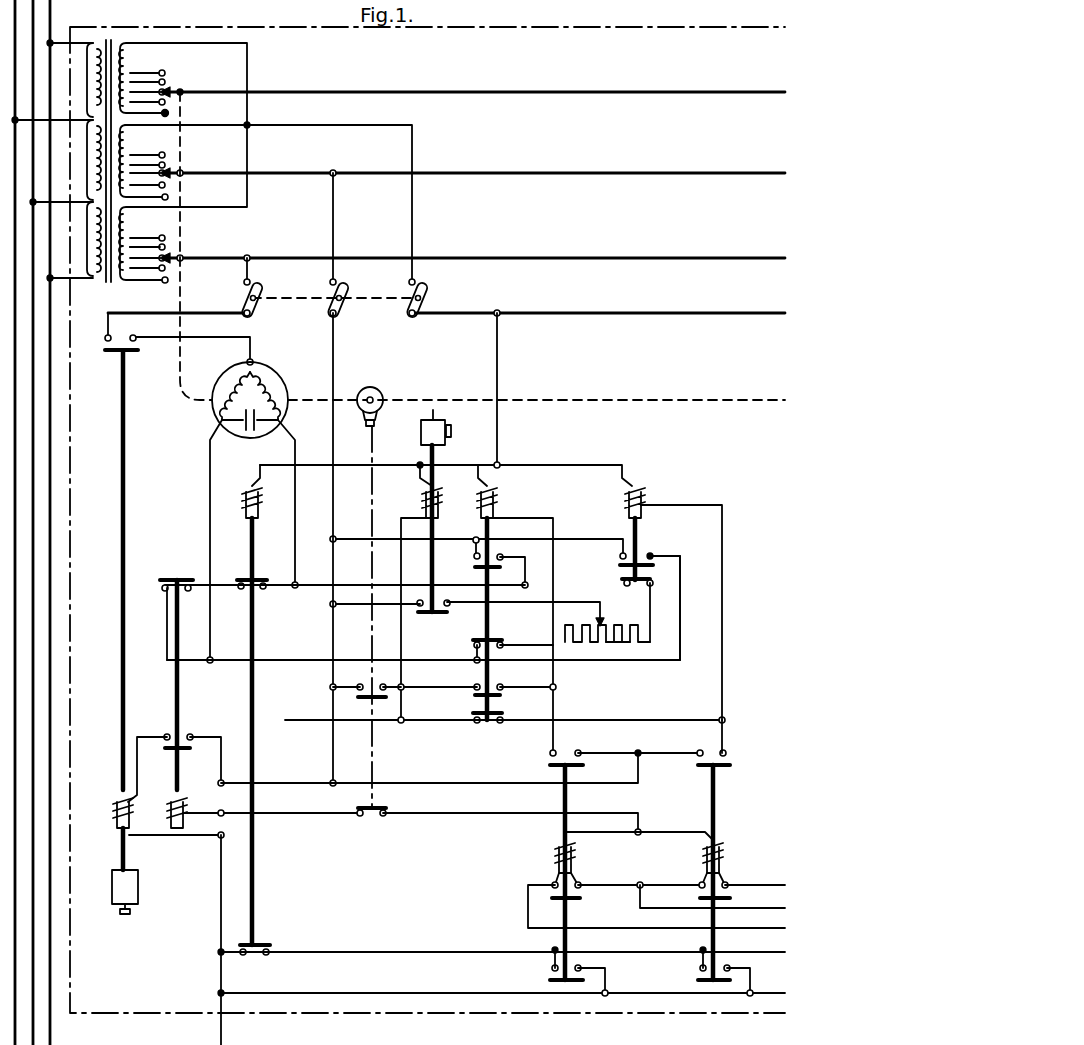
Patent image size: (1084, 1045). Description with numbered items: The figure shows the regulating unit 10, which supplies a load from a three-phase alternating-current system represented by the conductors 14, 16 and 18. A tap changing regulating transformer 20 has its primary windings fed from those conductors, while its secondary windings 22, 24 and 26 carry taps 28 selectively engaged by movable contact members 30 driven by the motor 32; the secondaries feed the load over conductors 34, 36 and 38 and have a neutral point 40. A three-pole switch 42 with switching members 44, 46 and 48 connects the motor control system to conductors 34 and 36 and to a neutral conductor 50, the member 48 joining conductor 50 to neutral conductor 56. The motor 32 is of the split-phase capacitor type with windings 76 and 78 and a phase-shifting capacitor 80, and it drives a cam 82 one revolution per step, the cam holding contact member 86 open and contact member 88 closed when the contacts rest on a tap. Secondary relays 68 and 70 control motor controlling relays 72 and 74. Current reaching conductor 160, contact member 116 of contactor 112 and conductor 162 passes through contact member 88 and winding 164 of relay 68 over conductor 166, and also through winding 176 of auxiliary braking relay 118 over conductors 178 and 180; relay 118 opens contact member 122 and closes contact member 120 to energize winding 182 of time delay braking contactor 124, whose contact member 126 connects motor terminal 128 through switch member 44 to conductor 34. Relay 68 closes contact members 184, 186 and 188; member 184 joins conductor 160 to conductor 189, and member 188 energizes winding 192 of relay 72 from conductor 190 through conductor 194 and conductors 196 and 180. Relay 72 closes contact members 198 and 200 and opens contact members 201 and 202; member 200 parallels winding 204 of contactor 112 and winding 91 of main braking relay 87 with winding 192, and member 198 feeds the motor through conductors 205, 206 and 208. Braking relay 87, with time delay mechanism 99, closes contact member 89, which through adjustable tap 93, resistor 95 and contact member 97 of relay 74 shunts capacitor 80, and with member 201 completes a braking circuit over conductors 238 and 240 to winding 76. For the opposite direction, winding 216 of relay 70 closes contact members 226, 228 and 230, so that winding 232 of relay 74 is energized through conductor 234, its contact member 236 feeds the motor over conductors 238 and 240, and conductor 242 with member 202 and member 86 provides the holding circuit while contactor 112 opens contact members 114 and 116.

The regulating unit 10 is at (470, 23).
The conductor 14 is at (50, 528).
The conductor 16 is at (33, 556).
The conductor 18 is at (15, 582).
The tap changing regulating transformer 20 is at (127, 303).
The secondary winding 22 is at (130, 216).
The secondary winding 24 is at (130, 134).
The secondary winding 26 is at (130, 52).
The taps 28 is at (163, 247).
The movable contact member 30 is at (167, 172).
The motor 32 is at (196, 431).
The conductor 34 is at (620, 249).
The conductor 36 is at (620, 164).
The conductor 38 is at (340, 86).
The neutral point 40 is at (248, 125).
The three-pole switch 42 is at (462, 308).
The switching member 44 is at (258, 290).
The switching member 46 is at (344, 290).
The switching member 48 is at (424, 290).
The neutral conductor 50 is at (413, 222).
The neutral conductor 56 is at (627, 308).
The secondary relay 68 is at (544, 861).
The secondary relay 70 is at (755, 861).
The motor controlling relay 72 is at (530, 495).
The motor controlling relay 74 is at (672, 533).
The single-phase winding 76 is at (232, 382).
The single-phase winding 78 is at (273, 382).
The phase-shifting capacitor 80 is at (240, 428).
The cam member 82 is at (372, 388).
The contact member 86 is at (370, 701).
The main braking relay 87 is at (431, 553).
The contact member 88 is at (380, 806).
The contact member 89 is at (390, 621).
The energizing winding 91 is at (424, 496).
The adjustable tap 93 is at (601, 624).
The resistor 95 is at (598, 646).
The contact member 97 is at (636, 610).
The time delay mechanism 99 is at (436, 420).
The contactor 112 is at (250, 548).
The contact member 114 is at (264, 577).
The contact member 116 is at (267, 943).
The auxiliary braking relay 118 is at (217, 773).
The contact member 120 is at (170, 750).
The contact member 122 is at (185, 580).
The time delay braking contactor 124 is at (123, 780).
The contact member 126 is at (116, 356).
The terminal 128 is at (251, 360).
The conductor 160 is at (444, 942).
The conductor 162 is at (221, 878).
The energizing winding 164 is at (573, 862).
The conductor 166 is at (528, 907).
The energizing winding 176 is at (183, 800).
The conductor 178 is at (306, 779).
The conductor 180 is at (333, 630).
The energizing winding 182 is at (118, 818).
The contact member 184 is at (550, 980).
The contact member 186 is at (571, 904).
The contact member 188 is at (573, 768).
The conductor 189 is at (372, 988).
The conductor 190 is at (497, 442).
The energizing winding 192 is at (484, 488).
The conductor 194 is at (553, 569).
The conductor 196 is at (492, 779).
The contact member 198 is at (475, 564).
The contact member 200 is at (473, 698).
The contact member 201 is at (510, 636).
The contact member 202 is at (504, 710).
The energizing winding 204 is at (246, 492).
The conductor 205 is at (497, 535).
The conductor 206 is at (497, 596).
The conductor 208 is at (295, 525).
The energizing winding 216 is at (705, 848).
The contact member 226 is at (698, 980).
The contact member 228 is at (700, 895).
The contact member 230 is at (700, 767).
The energizing winding 232 is at (634, 484).
The conductor 234 is at (722, 600).
The contact member 236 is at (620, 572).
The conductor 238 is at (583, 666).
The conductor 240 is at (210, 517).
The conductor 242 is at (638, 716).